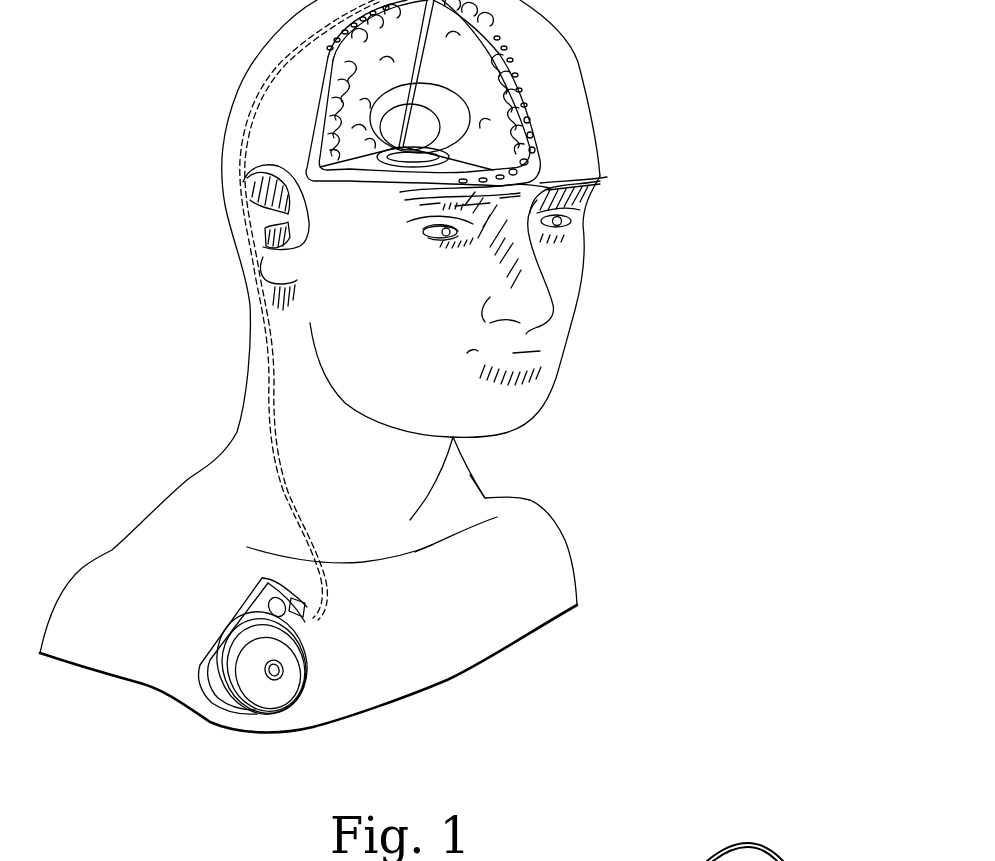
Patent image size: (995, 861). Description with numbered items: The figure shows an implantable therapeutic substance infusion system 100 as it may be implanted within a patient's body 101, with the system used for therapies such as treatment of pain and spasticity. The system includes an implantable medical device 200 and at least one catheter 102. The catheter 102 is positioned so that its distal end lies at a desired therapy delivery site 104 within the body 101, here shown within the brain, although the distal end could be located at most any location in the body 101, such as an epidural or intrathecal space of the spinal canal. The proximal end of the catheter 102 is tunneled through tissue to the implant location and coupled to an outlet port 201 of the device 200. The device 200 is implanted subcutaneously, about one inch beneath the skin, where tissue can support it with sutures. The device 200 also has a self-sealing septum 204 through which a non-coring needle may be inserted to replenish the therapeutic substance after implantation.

The therapeutic substance infusion system 100 is at (320, 686).
The patient's body 101 is at (567, 542).
The catheter 102 is at (268, 352).
The therapy delivery site 104 is at (428, 134).
The implantable medical device 200 is at (233, 653).
The outlet port 201 is at (308, 592).
The self-sealing septum 204 is at (280, 680).